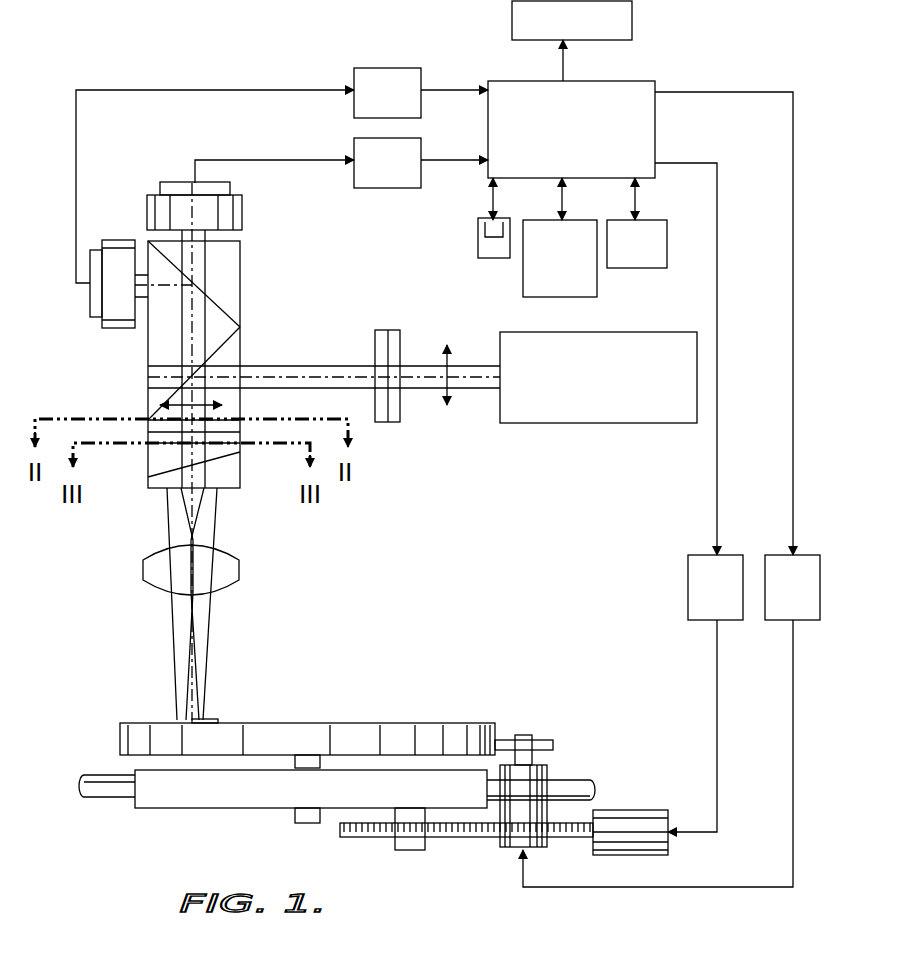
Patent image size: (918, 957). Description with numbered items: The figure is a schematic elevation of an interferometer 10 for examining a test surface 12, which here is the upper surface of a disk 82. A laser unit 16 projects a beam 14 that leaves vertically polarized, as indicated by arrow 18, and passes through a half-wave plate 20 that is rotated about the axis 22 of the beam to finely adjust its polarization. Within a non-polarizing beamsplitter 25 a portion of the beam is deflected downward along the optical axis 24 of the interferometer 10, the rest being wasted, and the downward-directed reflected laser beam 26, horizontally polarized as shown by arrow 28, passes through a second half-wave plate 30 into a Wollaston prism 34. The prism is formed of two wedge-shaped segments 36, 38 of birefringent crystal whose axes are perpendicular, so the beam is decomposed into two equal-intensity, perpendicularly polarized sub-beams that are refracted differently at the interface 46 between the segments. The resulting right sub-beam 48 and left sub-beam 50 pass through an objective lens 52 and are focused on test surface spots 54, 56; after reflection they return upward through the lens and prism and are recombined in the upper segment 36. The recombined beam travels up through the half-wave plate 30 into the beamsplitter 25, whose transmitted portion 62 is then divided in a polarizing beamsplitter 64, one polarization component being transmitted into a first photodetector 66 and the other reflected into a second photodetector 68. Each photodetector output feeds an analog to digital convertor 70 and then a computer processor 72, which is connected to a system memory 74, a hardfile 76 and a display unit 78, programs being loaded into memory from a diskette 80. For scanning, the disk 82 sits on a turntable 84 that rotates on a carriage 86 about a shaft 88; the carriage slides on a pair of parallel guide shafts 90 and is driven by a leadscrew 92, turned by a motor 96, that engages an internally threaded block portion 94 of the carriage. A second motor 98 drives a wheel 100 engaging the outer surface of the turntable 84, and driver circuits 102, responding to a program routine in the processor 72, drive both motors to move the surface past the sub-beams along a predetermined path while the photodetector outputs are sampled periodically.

The interferometer 10 is at (87, 570).
The test surface 12 is at (290, 725).
The beam 14 is at (478, 388).
The laser unit 16 is at (570, 423).
The arrow 18 is at (445, 367).
The half-wave plate 20 is at (384, 422).
The axis 22 is at (338, 372).
The optical axis 24 is at (210, 660).
The non-polarizing beamsplitter 25 is at (160, 352).
The reflected laser beam 26 is at (226, 410).
The arrow 28 is at (190, 402).
The second half-wave plate 30 is at (158, 408).
The Wollaston prism 34 is at (238, 462).
The wedge-shaped segment 36 is at (163, 455).
The wedge-shaped segment 38 is at (223, 483).
The interface 46 is at (163, 488).
The right sub-beam 48 is at (213, 523).
The left sub-beam 50 is at (167, 530).
The objective lens 52 is at (155, 587).
The test surface spot 54 is at (210, 718).
The test surface spot 56 is at (175, 718).
The transmitted portion 62 is at (232, 320).
The polarizing beamsplitter 64 is at (225, 280).
The first photodetector 66 is at (242, 222).
The second photodetector 68 is at (125, 240).
The analog to digital convertor 70 is at (397, 67).
The computer processor 72 is at (512, 12).
The system memory 74 is at (627, 268).
The hardfile 76 is at (523, 280).
The display unit 78 is at (640, 81).
The diskette 80 is at (478, 240).
The disk 82 is at (372, 725).
The turntable 84 is at (120, 737).
The carriage 86 is at (176, 808).
The shaft 88 is at (305, 823).
The guide shafts 90 is at (107, 797).
The leadscrew 92 is at (372, 840).
The internally threaded block portion 94 is at (407, 852).
The motor 96 is at (648, 810).
The second motor 98 is at (510, 848).
The wheel 100 is at (553, 742).
The driver circuits 102 is at (705, 555).